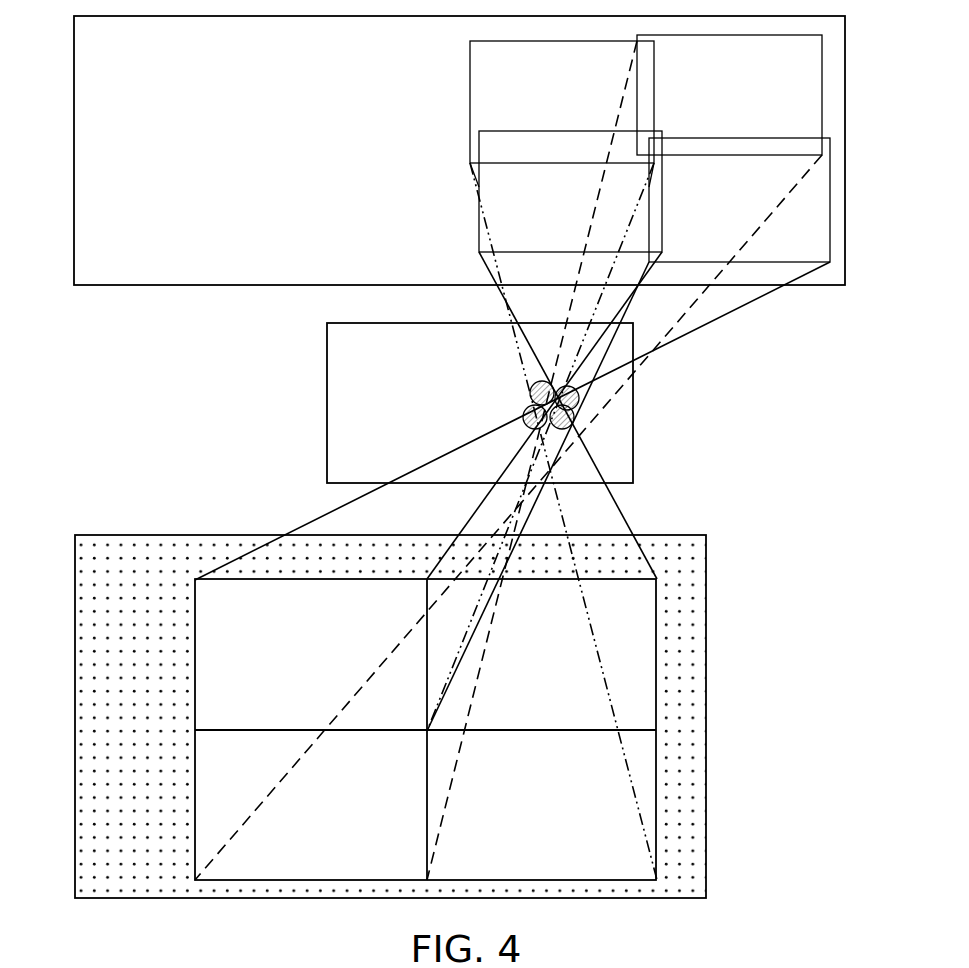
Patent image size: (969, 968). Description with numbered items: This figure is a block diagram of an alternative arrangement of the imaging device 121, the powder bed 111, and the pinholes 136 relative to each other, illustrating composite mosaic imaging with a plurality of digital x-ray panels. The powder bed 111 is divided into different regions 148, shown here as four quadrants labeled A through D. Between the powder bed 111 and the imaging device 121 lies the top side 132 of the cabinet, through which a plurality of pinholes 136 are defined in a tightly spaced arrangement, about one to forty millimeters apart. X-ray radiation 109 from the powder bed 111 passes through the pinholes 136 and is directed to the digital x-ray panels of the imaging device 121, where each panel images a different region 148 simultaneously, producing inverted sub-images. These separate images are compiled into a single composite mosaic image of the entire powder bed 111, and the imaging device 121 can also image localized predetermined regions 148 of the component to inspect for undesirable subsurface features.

The imaging device 121 is at (822, 130).
The top side 132 is at (340, 399).
The pinholes 136 is at (553, 373).
The x-ray radiation 109 is at (530, 493).
The powder bed 111 is at (706, 672).
The regions 148 is at (195, 703).